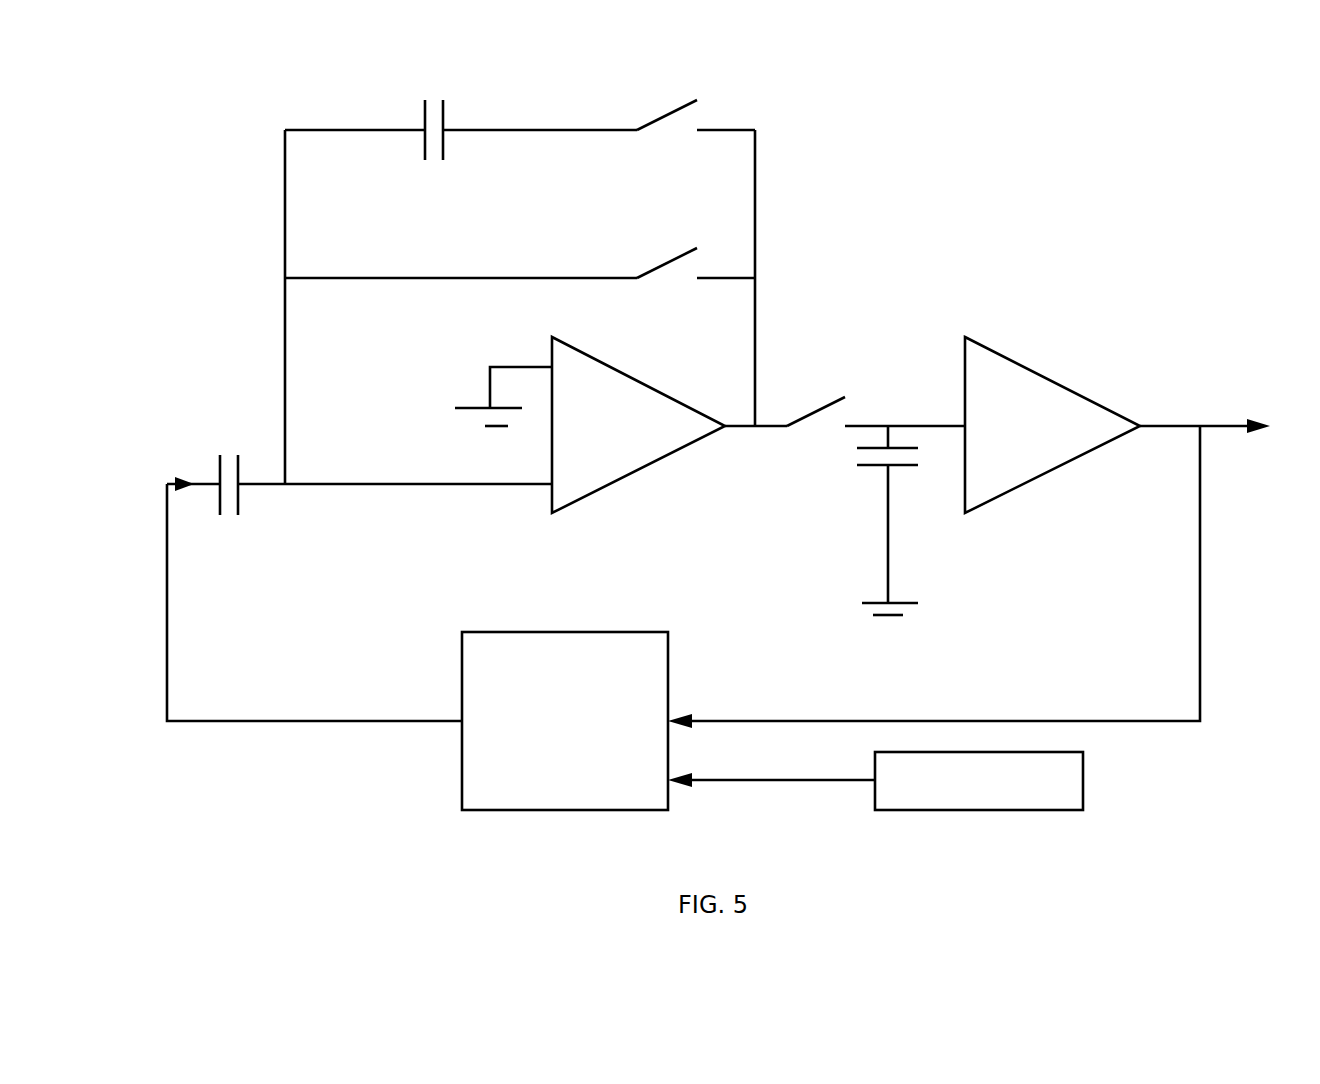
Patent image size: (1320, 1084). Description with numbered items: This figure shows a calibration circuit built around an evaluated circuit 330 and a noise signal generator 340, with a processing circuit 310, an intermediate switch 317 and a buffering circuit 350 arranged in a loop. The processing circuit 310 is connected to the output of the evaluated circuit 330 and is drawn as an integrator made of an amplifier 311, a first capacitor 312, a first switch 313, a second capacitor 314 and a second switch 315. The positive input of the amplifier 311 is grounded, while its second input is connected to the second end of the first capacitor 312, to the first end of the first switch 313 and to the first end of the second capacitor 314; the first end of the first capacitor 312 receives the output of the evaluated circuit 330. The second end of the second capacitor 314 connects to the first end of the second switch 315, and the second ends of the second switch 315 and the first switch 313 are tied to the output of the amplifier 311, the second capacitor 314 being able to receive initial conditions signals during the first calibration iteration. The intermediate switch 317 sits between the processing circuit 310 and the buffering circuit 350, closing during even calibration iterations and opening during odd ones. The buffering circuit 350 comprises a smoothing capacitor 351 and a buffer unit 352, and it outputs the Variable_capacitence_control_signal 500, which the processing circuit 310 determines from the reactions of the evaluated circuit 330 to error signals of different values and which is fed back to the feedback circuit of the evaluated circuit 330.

The processing circuit 310 is at (805, 290).
The amplifier 311 is at (648, 437).
The first capacitor 312 is at (208, 467).
The first switch 313 is at (520, 255).
The second capacitor 314 is at (461, 128).
The second switch 315 is at (686, 113).
The intermediate switch 317 is at (837, 399).
The evaluated circuit 330 is at (585, 732).
The noise signal generator 340 is at (997, 792).
The buffering circuit 350 is at (994, 292).
The smoothing capacitor 351 is at (857, 465).
The buffer unit 352 is at (1073, 437).
The Variable_capacitence_control_signal 500 is at (1200, 642).